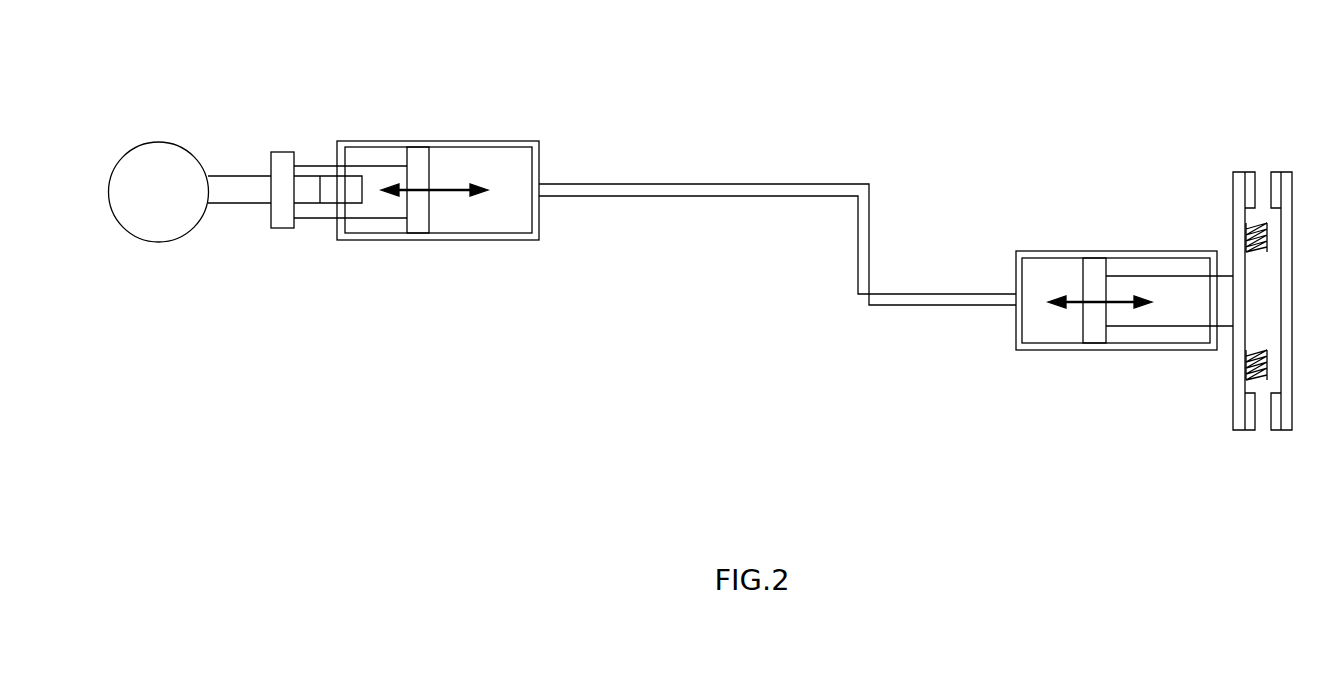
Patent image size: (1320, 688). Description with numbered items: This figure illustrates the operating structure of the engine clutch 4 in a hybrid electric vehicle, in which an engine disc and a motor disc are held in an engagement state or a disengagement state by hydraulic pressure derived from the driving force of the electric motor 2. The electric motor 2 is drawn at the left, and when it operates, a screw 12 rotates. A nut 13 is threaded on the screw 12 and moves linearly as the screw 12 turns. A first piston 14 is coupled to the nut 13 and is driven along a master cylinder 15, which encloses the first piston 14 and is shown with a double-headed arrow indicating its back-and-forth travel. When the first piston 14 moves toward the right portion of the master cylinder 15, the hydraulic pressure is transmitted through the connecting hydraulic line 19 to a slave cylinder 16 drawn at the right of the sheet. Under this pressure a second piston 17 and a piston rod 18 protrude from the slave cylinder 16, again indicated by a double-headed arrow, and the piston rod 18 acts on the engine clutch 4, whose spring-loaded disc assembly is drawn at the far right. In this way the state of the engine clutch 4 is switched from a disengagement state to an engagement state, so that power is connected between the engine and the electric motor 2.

The electric motor 2 is at (160, 142).
The screw 12 is at (238, 176).
The nut 13 is at (386, 208).
The first piston 14 is at (418, 157).
The master cylinder 15 is at (508, 143).
The hydraulic line 19 is at (705, 189).
The slave cylinder 16 is at (1048, 257).
The second piston 17 is at (1094, 333).
The piston rod 18 is at (1160, 282).
The engine clutch 4 is at (1265, 130).